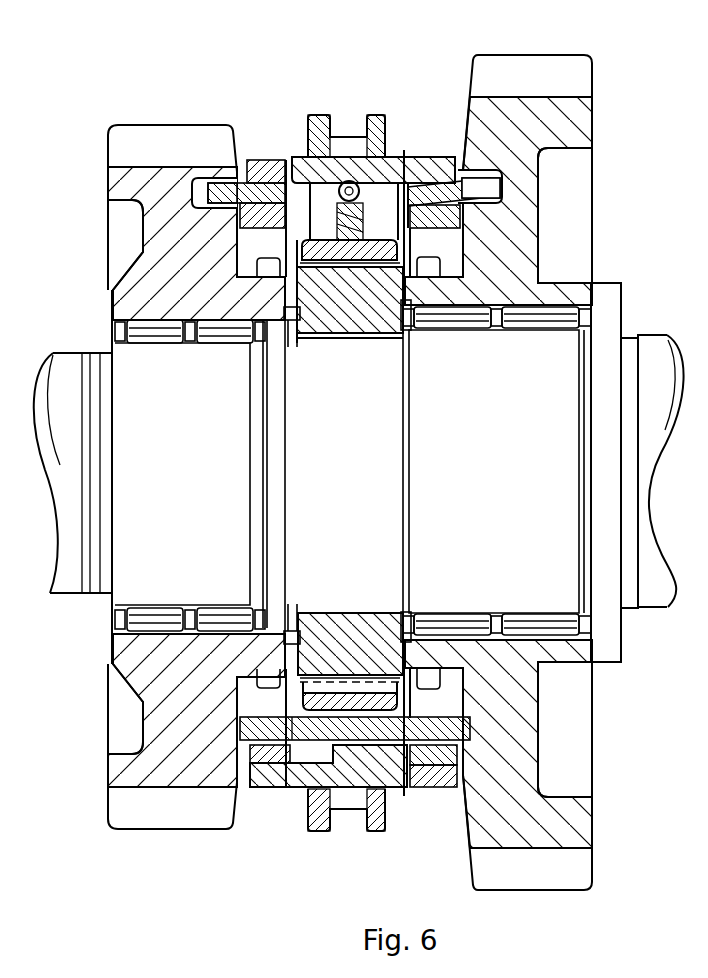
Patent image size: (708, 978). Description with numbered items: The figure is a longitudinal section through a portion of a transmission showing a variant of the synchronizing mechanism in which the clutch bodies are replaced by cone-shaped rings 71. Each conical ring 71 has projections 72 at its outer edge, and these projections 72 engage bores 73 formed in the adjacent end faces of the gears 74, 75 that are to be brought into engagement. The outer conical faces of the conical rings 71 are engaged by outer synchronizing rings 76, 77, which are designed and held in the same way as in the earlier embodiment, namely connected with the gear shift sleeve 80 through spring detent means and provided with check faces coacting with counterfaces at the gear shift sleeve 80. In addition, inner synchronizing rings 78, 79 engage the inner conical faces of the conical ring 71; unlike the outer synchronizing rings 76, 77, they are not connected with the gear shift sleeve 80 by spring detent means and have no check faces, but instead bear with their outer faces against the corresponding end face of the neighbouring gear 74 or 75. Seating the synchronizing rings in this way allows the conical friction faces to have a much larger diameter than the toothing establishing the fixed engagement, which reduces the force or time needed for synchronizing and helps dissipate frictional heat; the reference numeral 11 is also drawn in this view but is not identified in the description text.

The friction ring 11 is at (432, 193).
The conical ring 71 is at (273, 197).
The projection 72 is at (210, 193).
The bore 73 is at (197, 195).
The gear 74 is at (552, 253).
The gear 75 is at (120, 190).
The synchronizing ring 76 is at (400, 170).
The synchronizing ring 77 is at (262, 180).
The synchronizing ring 78 is at (540, 235).
The synchronizing ring 79 is at (247, 218).
The gear shift sleeve 80 is at (316, 118).